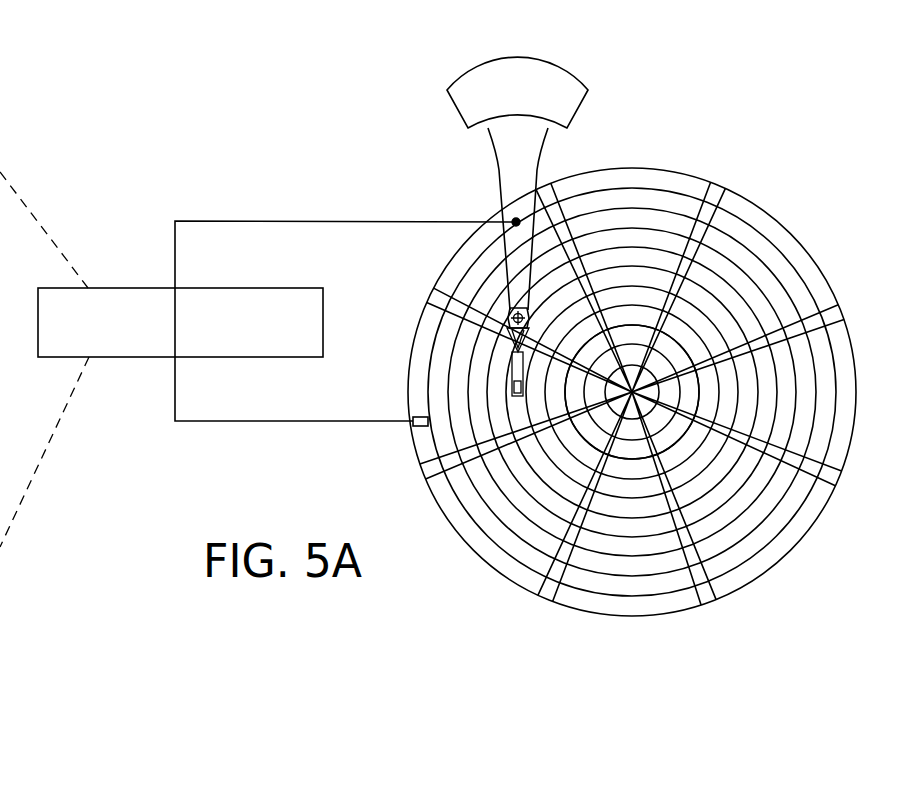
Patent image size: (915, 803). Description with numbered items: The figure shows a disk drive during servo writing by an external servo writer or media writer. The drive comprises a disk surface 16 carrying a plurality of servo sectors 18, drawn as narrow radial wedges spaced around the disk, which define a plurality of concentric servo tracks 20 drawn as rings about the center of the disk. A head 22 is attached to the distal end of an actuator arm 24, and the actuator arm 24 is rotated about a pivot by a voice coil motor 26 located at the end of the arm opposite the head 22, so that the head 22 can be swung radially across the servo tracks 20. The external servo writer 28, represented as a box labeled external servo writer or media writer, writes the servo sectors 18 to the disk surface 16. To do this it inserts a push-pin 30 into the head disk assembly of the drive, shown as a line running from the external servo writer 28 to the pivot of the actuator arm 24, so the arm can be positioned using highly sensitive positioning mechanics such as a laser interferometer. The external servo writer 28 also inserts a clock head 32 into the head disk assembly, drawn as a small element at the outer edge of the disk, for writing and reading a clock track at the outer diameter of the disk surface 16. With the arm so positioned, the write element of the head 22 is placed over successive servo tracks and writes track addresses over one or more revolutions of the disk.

The disk surface 16 is at (782, 224).
The servo sectors 18 is at (553, 191).
The servo tracks 20 is at (633, 200).
The head 22 is at (511, 396).
The actuator arm 24 is at (498, 203).
The voice coil motor 26 is at (468, 129).
The external servo writer 28 is at (215, 288).
The push-pin 30 is at (264, 221).
The clock head 32 is at (420, 417).